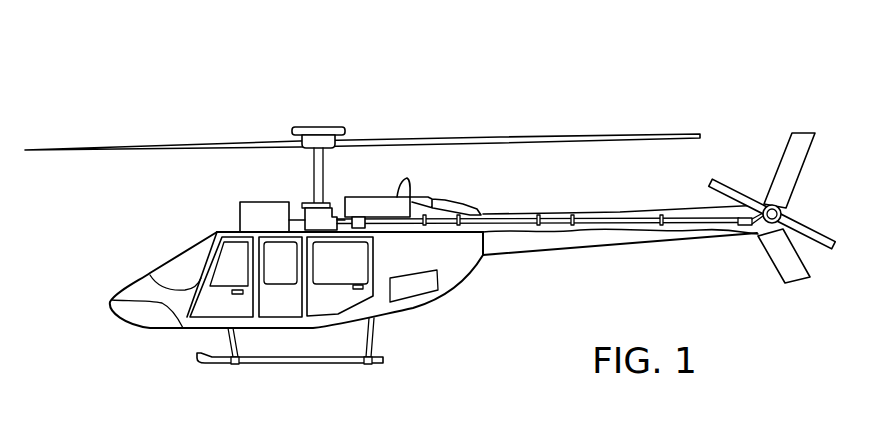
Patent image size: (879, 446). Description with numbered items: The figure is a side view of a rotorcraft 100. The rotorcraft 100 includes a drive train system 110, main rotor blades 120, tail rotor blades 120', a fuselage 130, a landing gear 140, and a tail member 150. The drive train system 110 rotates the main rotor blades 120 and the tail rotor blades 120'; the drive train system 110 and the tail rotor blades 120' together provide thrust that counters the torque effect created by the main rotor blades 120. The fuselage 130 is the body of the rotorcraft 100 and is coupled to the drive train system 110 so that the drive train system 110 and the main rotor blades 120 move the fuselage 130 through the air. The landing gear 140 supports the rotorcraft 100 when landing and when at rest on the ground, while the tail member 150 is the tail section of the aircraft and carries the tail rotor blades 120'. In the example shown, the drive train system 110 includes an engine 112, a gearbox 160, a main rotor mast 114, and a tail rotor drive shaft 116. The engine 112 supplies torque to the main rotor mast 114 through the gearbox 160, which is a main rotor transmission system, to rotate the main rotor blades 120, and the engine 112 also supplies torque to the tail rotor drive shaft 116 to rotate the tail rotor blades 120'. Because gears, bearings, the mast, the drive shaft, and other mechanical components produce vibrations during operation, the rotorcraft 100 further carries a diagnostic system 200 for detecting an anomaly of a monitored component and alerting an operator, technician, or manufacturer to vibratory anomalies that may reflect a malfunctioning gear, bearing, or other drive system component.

The rotorcraft 100 is at (181, 70).
The drive train system 110 is at (346, 109).
The engine 112 is at (423, 190).
The main rotor mast 114 is at (323, 180).
The tail rotor drive shaft 116 is at (620, 216).
The main rotor blades 120 is at (362, 119).
The tail rotor blades 120' is at (772, 194).
The fuselage 130 is at (418, 312).
The landing gear 140 is at (282, 365).
The tail member 150 is at (560, 252).
The gearbox 160 is at (307, 199).
The diagnostic system 200 is at (240, 214).